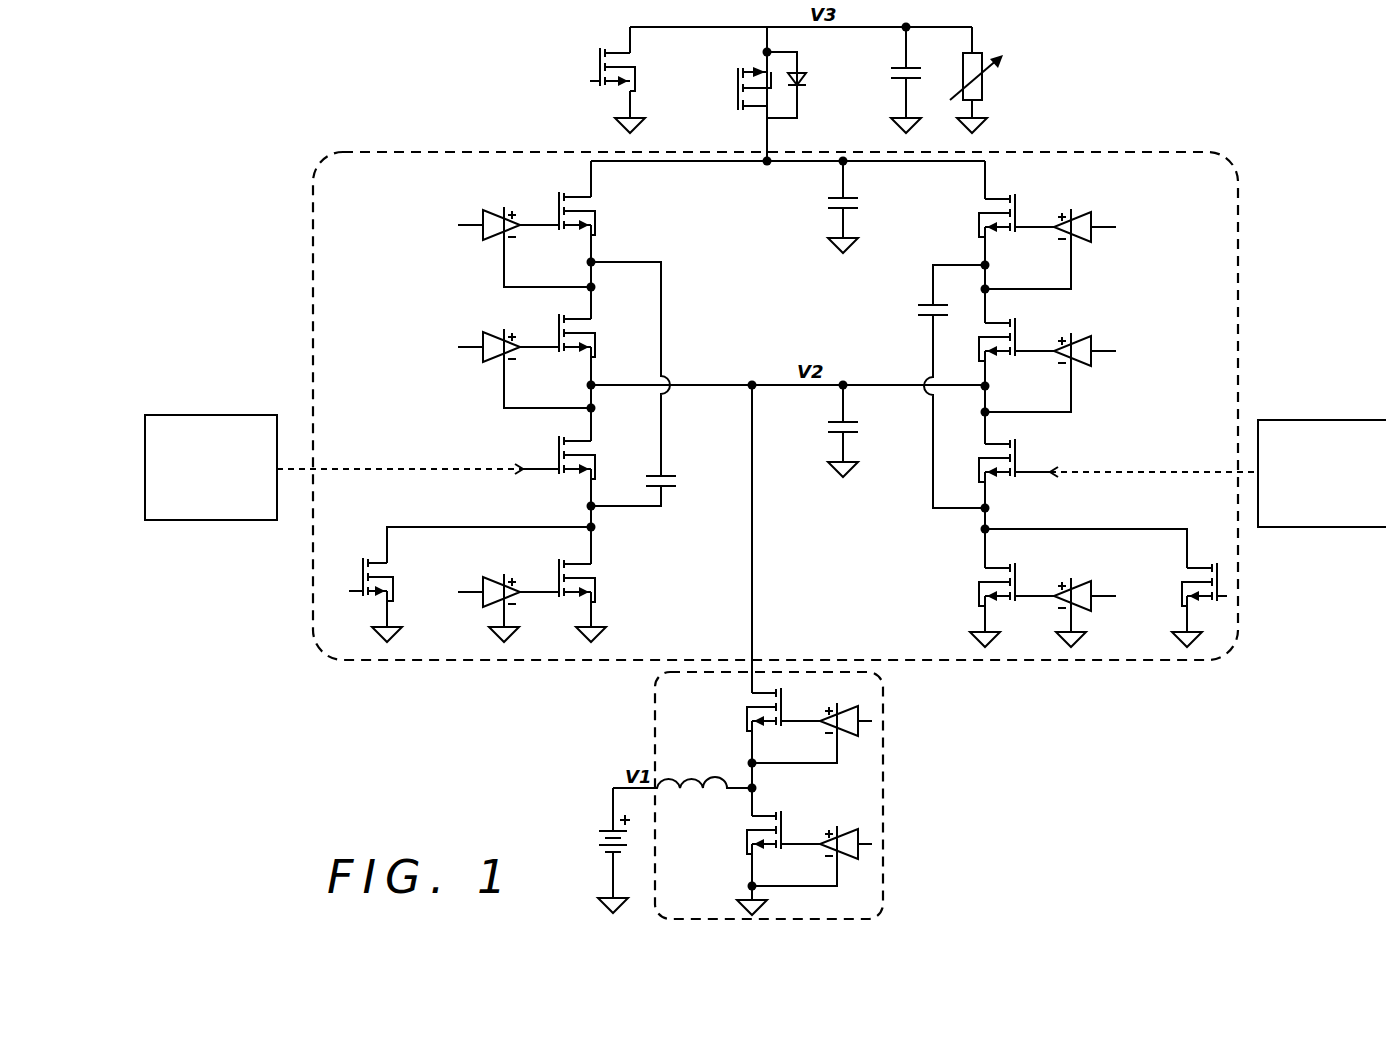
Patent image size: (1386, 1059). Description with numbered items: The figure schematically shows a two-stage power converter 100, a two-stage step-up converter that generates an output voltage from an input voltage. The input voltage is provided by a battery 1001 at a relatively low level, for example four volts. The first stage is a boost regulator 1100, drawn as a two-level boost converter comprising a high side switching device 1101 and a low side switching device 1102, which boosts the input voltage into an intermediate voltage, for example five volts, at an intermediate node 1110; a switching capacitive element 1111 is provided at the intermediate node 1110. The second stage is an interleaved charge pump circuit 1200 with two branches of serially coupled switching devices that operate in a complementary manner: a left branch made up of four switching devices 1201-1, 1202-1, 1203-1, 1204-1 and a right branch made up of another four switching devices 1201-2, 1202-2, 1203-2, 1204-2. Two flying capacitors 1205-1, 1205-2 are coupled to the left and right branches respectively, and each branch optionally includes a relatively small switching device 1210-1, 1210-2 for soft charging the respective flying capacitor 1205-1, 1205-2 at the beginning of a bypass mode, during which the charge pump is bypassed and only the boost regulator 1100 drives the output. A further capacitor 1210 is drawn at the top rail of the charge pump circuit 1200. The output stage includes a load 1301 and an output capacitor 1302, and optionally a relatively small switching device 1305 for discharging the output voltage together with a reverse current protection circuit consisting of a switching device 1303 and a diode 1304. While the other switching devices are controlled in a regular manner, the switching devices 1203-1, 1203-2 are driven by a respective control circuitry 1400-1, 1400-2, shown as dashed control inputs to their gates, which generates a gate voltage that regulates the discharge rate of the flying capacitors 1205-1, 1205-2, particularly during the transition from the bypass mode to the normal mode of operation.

The two-stage power converter 100 is at (319, 112).
The battery 1001 is at (600, 832).
The boost regulator 1100 is at (883, 768).
The high side switching device 1101 is at (757, 702).
The low side switching device 1102 is at (753, 825).
The intermediate node 1110 is at (753, 381).
The switching capacitive element 1111 is at (861, 428).
The charge pump circuit 1200 is at (1238, 300).
The switching device 1201-1 is at (552, 196).
The switching device 1202-1 is at (552, 317).
The switching device 1203-1 is at (552, 441).
The switching device 1204-1 is at (596, 576).
The flying capacitor 1205-1 is at (665, 488).
The small switching device 1210-1 is at (390, 572).
The switching device 1201-2 is at (1022, 197).
The switching device 1202-2 is at (1022, 320).
The switching device 1203-2 is at (1022, 444).
The switching device 1204-2 is at (978, 578).
The flying capacitor 1205-2 is at (930, 306).
The small switching device 1210-2 is at (1185, 573).
The output capacitor of switched stage 1210 is at (861, 202).
The load 1301 is at (1006, 80).
The output capacitor 1302 is at (892, 67).
The switching device 1303 is at (738, 103).
The diode 1304 is at (806, 78).
The small switching device 1305 is at (600, 51).
The control circuitry 1400-1 is at (240, 414).
The control circuitry 1400-2 is at (1298, 420).